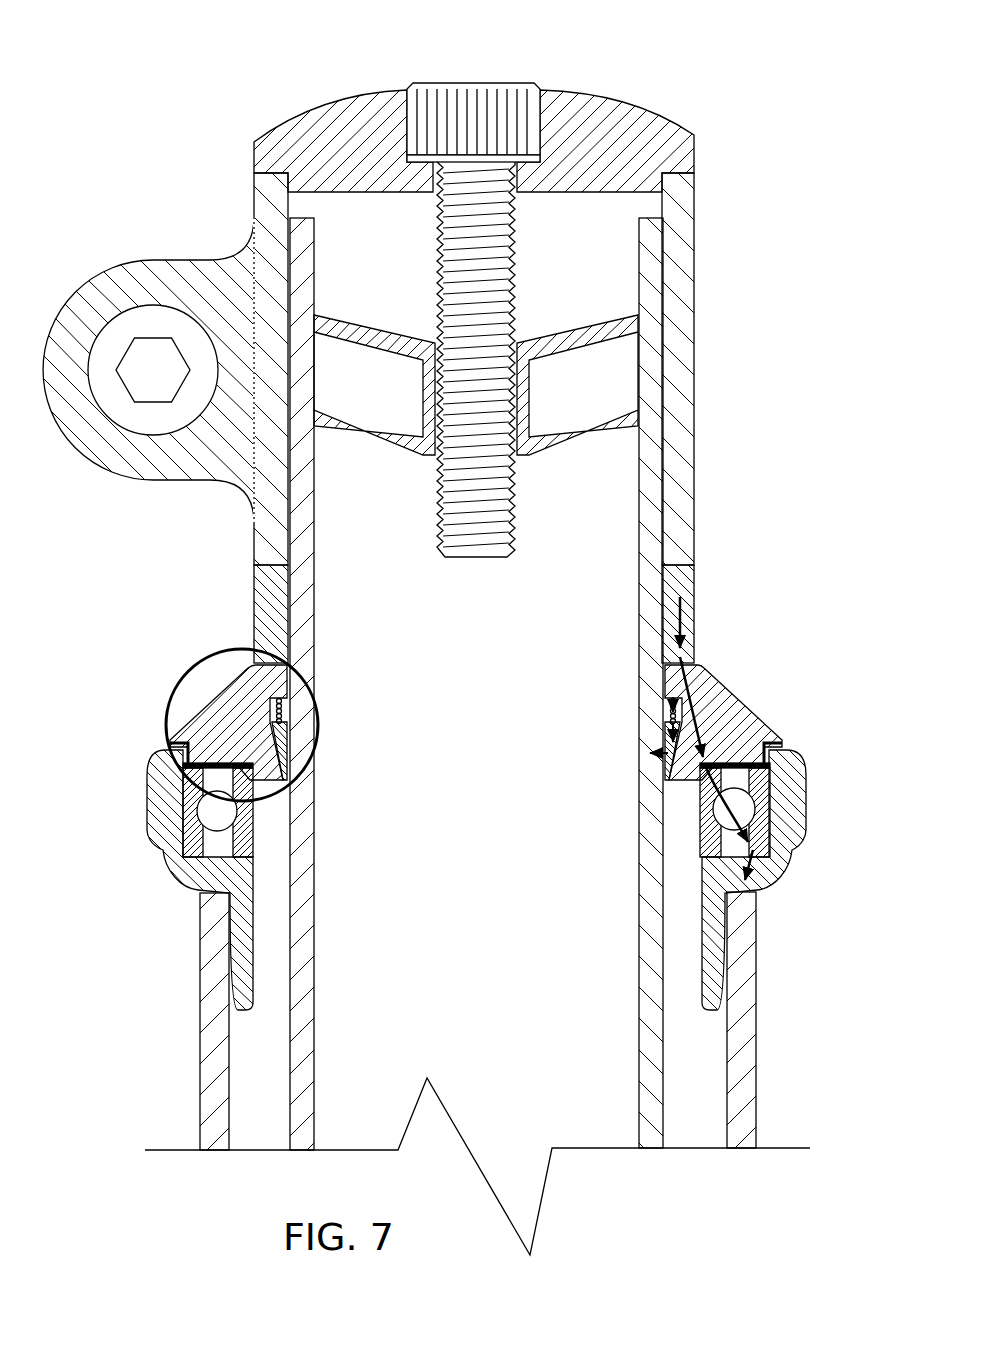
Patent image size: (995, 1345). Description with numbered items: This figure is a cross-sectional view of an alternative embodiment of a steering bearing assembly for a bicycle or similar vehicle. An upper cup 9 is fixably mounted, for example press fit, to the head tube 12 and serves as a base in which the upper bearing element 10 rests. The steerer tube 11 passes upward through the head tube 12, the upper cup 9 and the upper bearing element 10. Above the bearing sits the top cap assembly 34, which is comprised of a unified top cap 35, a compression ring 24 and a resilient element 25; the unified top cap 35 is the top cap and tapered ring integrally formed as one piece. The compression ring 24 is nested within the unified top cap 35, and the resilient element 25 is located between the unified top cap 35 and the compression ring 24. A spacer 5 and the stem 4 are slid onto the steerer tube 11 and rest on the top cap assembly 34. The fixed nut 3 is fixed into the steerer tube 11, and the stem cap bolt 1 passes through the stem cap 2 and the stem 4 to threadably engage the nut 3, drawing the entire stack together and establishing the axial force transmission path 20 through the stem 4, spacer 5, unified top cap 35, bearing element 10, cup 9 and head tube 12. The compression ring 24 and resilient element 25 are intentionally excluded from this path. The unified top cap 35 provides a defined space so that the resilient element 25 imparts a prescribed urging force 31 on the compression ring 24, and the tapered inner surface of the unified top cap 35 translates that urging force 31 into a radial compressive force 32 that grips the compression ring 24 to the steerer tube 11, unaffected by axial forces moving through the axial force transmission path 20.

The stem cap bolt 1 is at (493, 98).
The stem cap 2 is at (372, 118).
The fixed nut 3 is at (555, 345).
The stem 4 is at (175, 258).
The spacer 5 is at (265, 603).
The upper cup 9 is at (165, 825).
The upper bearing element 10 is at (255, 800).
The steerer tube 11 is at (305, 960).
The head tube 12 is at (215, 992).
The axial force transmission path 20 is at (697, 708).
The compression ring 24 is at (287, 740).
The resilient element 25 is at (280, 710).
The prescribed urging force 31 is at (677, 705).
The radial compressive force 32 is at (663, 757).
The top cap assembly 34 is at (163, 722).
The unified top cap 35 is at (238, 697).